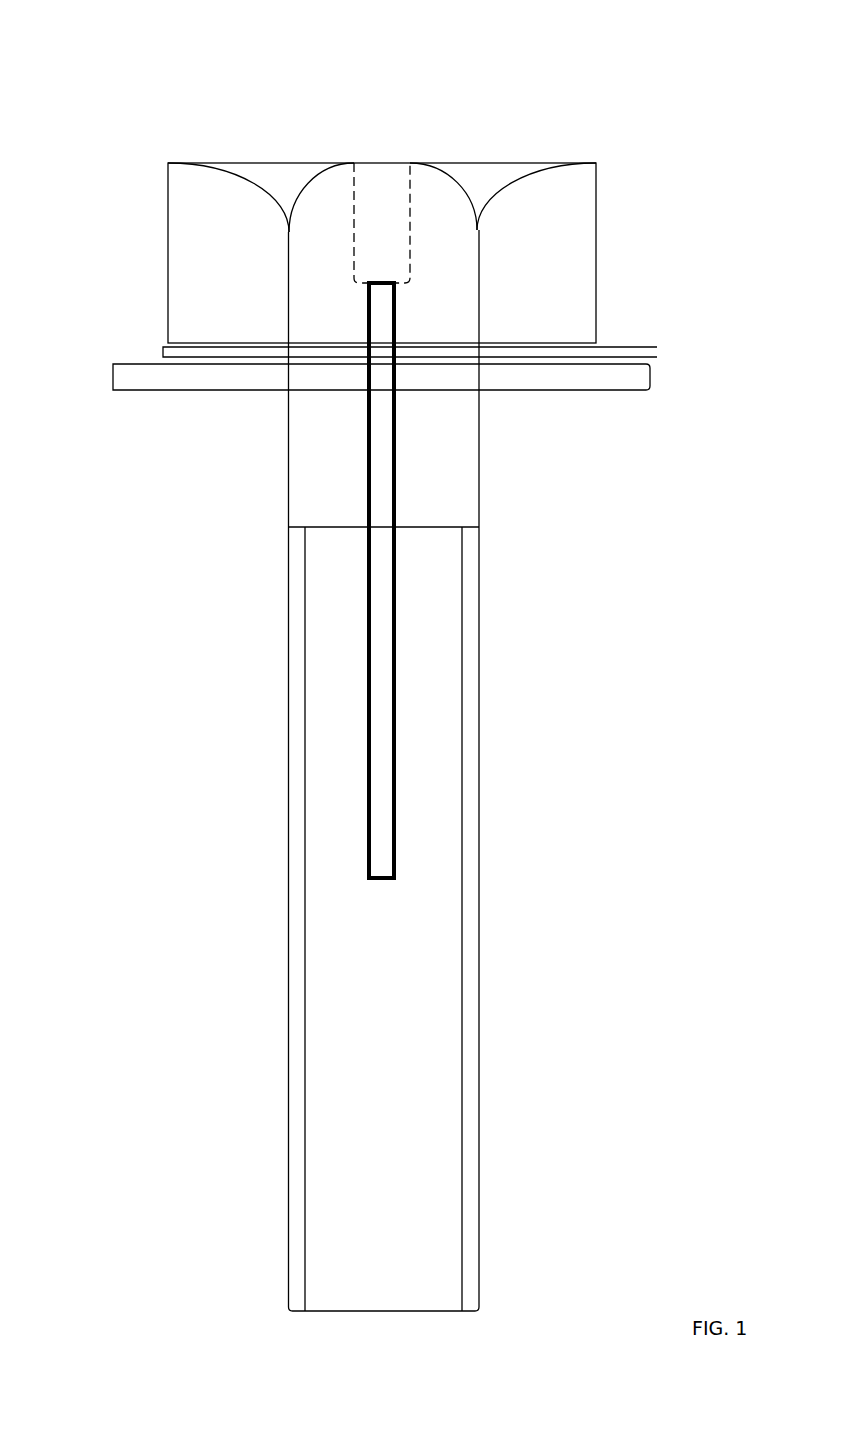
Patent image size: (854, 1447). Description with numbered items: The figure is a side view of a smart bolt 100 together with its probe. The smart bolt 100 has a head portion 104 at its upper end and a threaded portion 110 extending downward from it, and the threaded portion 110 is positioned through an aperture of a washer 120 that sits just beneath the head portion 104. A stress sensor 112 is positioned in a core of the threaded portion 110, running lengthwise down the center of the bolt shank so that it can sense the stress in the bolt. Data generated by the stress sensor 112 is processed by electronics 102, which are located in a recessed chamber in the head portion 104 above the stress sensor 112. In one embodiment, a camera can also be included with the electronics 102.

The smart bolt 100 is at (353, 657).
The electronics 102 is at (390, 162).
The head portion 104 is at (167, 233).
The threaded portion 110 is at (384, 770).
The stress sensor 112 is at (384, 599).
The washer 120 is at (110, 375).